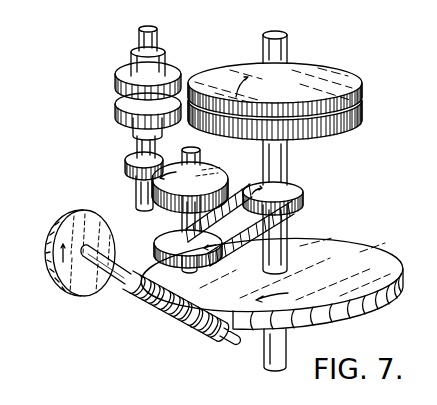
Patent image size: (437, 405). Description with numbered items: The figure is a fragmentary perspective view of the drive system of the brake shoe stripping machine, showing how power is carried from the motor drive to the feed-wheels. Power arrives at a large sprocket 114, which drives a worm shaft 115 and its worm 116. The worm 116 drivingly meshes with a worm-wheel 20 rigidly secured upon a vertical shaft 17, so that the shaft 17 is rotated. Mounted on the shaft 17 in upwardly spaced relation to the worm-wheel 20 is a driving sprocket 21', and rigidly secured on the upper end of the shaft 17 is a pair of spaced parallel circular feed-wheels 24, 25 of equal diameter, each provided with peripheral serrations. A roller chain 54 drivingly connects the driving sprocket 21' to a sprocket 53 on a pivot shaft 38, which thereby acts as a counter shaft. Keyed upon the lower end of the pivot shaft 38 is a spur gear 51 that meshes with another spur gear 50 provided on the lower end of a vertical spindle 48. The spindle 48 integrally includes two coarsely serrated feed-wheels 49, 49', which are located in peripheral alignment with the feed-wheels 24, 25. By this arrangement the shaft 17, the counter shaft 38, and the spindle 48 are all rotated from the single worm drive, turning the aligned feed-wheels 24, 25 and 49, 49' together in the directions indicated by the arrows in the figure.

The vertical shaft 17 is at (289, 48).
The worm-wheel 20 is at (385, 263).
The driving sprocket 21' is at (292, 188).
The circular feed-wheel 24 is at (354, 90).
The circular feed-wheel 25 is at (357, 128).
The pivot shaft 38 is at (200, 158).
The vertical spindle 48 is at (132, 52).
The coarsely serrated feed-wheel 49 is at (129, 79).
The coarsely serrated feed-wheel 49' is at (128, 116).
The spur gear 50 is at (126, 161).
The spur gear 51 is at (163, 209).
The sprocket 53 is at (207, 234).
The roller chain 54 is at (302, 213).
The large sprocket 114 is at (70, 220).
The worm shaft 115 is at (118, 292).
The worm 116 is at (176, 322).